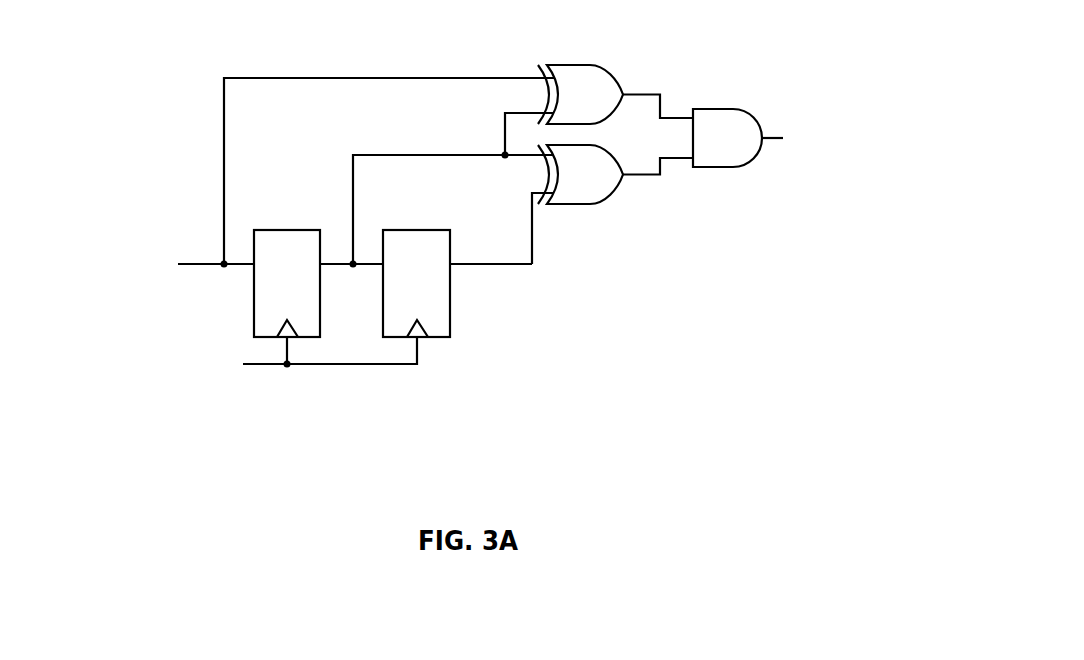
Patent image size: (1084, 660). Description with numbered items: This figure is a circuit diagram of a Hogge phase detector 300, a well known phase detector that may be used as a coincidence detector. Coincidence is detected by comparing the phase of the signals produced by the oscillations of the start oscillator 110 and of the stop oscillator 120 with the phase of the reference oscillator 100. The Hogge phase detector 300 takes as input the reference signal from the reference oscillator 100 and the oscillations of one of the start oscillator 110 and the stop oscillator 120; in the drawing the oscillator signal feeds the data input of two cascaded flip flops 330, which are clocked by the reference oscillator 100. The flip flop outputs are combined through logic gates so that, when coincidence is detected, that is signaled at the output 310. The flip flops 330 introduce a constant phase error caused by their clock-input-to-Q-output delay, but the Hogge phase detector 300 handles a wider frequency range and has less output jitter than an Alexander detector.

The Hogge phase detector 300 is at (372, 49).
The output 310 is at (867, 123).
The flip flops 330 is at (309, 310).
The start oscillator 110 is at (148, 232).
The stop oscillator 120 is at (117, 247).
The reference oscillator 100 is at (153, 398).